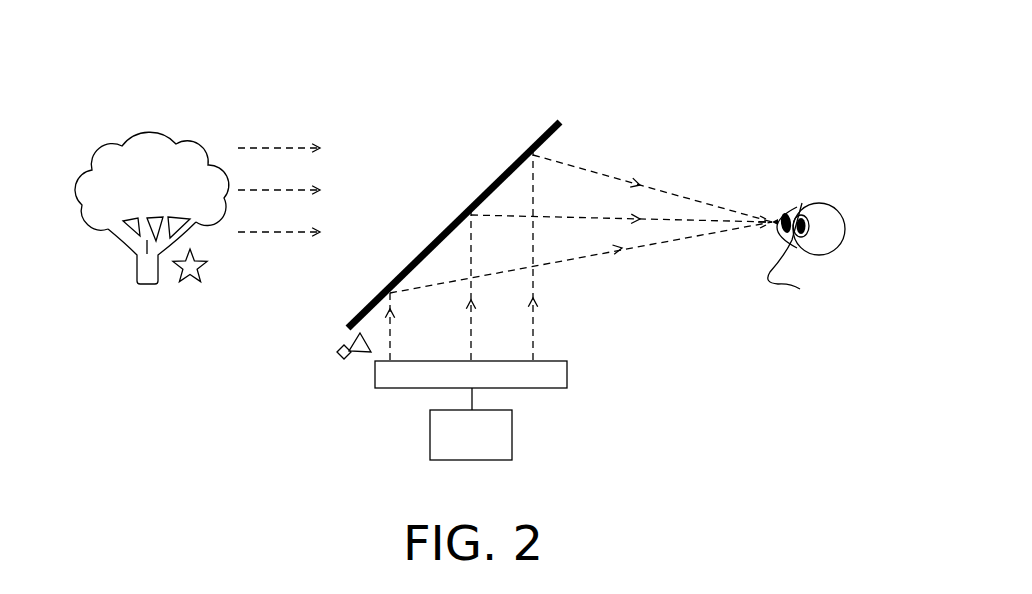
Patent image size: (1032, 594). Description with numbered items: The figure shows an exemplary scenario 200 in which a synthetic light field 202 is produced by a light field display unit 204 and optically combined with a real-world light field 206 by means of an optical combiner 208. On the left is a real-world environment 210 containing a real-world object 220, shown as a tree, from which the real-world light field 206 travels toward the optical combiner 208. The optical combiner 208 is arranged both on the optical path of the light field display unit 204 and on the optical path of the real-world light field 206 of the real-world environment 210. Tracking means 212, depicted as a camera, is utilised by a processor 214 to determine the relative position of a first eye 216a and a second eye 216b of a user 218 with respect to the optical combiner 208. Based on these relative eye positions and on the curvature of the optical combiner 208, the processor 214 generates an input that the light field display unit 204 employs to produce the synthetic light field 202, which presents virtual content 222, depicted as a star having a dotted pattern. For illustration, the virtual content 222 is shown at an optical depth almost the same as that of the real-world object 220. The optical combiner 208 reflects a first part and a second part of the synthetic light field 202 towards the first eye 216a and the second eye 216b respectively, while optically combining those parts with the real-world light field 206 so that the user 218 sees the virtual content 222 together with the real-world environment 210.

The exemplary scenario 200 is at (353, 86).
The synthetic light field 202 is at (678, 190).
The light field display unit 204 is at (475, 316).
The real-world light field 206 is at (297, 221).
The optical combiner 208 is at (511, 187).
The real-world environment 210 is at (138, 193).
The tracking means 212 is at (347, 383).
The processor 214 is at (492, 451).
The first eye 216a is at (795, 190).
The second eye 216b is at (834, 262).
The user 218 is at (852, 200).
The real-world object 220 is at (138, 210).
The virtual content 222 is at (186, 307).